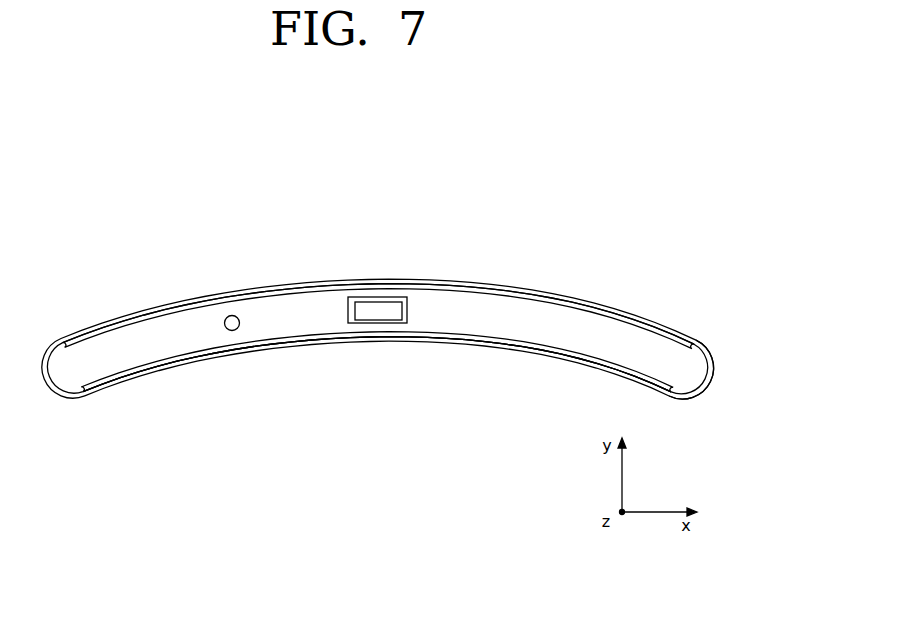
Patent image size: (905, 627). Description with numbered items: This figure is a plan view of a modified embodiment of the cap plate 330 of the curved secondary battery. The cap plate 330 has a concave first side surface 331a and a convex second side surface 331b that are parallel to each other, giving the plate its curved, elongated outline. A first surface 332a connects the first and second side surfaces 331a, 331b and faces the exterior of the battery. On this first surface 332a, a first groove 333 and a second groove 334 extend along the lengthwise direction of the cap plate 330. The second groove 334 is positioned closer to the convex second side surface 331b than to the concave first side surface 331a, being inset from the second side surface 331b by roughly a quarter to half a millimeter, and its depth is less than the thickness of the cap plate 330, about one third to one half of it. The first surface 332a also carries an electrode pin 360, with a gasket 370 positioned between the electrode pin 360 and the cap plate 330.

The cap plate 330 is at (626, 258).
The concave first side surface 331a is at (122, 383).
The convex second side surface 331b is at (128, 316).
The first surface 332a is at (692, 367).
The first groove 333 is at (520, 343).
The second groove 334 is at (524, 303).
The electrode pin 360 is at (370, 307).
The gasket 370 is at (409, 297).